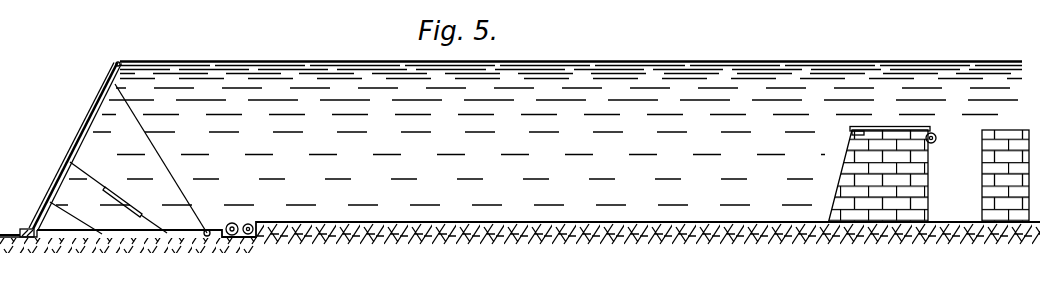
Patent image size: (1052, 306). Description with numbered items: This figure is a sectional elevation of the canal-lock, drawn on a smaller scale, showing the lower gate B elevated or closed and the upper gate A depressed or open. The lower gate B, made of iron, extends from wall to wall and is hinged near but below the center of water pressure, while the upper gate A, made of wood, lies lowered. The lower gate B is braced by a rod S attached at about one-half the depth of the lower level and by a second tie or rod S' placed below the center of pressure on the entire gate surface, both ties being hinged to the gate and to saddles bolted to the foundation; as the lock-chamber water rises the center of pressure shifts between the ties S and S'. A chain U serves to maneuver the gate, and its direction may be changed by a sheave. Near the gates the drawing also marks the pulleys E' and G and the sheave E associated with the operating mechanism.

The lower gate B is at (75, 146).
The chain U is at (162, 160).
The second tie or rod S' is at (118, 197).
The rod S is at (76, 218).
The pulley E' is at (232, 223).
The guide pulley G is at (249, 223).
The upper gate A is at (880, 164).
The pulley E is at (936, 139).